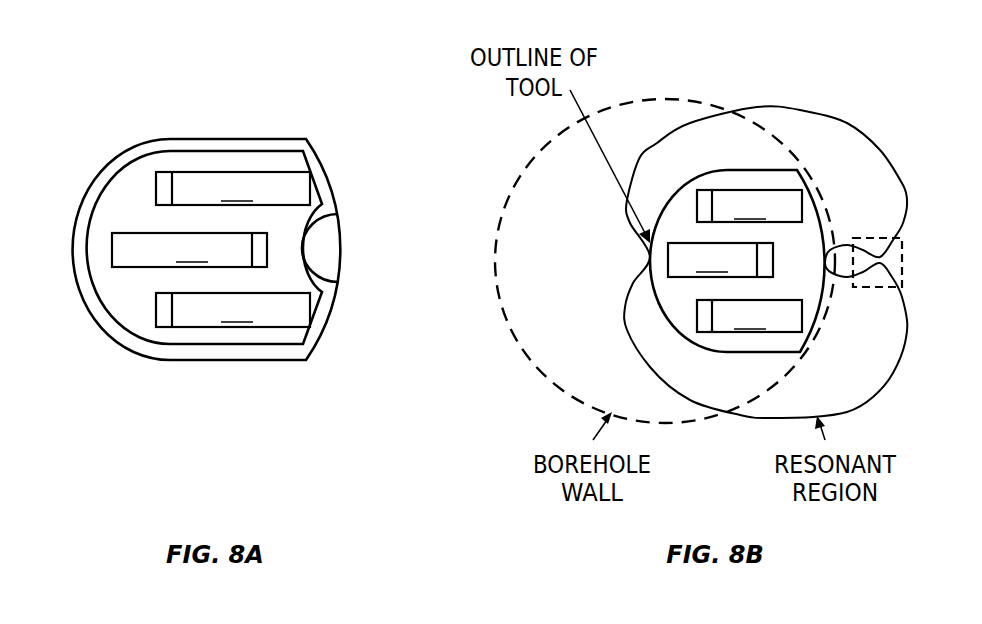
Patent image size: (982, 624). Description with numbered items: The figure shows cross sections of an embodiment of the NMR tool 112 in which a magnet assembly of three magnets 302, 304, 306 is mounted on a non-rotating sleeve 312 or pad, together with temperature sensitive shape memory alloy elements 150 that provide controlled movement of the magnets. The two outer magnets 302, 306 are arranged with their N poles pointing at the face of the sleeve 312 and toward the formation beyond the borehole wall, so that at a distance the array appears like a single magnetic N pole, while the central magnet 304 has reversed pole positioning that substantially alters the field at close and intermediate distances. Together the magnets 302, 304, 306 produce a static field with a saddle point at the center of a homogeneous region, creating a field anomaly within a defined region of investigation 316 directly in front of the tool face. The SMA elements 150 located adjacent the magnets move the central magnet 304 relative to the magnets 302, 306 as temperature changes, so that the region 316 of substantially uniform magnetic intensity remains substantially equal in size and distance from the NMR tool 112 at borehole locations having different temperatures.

In FIG. 8A, the NMR tool 112 is at (146, 120).
In FIG. 8A, the non-rotating sleeve 312 is at (217, 138).
In FIG. 8A, the magnet 302 is at (233, 188).
In FIG. 8B, the magnet 302 is at (749, 206).
In FIG. 8A, the central magnet 304 is at (189, 250).
In FIG. 8B, the central magnet 304 is at (720, 260).
In FIG. 8A, the magnet 306 is at (233, 310).
In FIG. 8B, the magnet 306 is at (749, 316).
In FIG. 8A, the temperature sensitive element 150 is at (156, 188).
In FIG. 8B, the temperature sensitive element 150 is at (698, 205).
In FIG. 8B, the region of investigation 316 is at (888, 228).